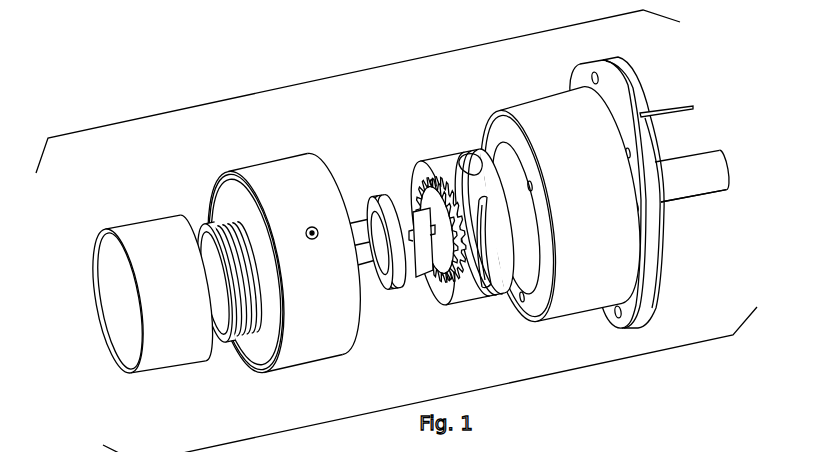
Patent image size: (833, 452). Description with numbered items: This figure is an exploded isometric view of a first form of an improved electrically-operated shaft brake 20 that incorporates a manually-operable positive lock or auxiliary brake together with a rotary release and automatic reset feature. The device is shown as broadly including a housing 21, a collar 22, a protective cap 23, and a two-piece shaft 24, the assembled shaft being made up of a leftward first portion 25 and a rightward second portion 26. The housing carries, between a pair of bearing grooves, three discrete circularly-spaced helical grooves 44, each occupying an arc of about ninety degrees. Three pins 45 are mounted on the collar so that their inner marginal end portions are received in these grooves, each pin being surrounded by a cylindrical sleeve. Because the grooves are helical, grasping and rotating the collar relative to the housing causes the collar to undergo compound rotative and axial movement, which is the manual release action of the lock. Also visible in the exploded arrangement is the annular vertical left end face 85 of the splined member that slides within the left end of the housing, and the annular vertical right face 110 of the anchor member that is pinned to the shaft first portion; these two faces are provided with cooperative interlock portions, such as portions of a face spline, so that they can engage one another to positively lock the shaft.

The electrically-operated shaft brake 20 is at (345, 75).
The housing 21 is at (637, 87).
The collar 22 is at (227, 172).
The protective cap 23 is at (103, 230).
The two-piece shaft 24 is at (737, 157).
The shaft first portion 25 is at (358, 219).
The shaft second portion 26 is at (703, 199).
The helical grooves 44 is at (463, 148).
The pins 45 is at (317, 241).
The annular vertical left end face 85 is at (433, 284).
The annular vertical right face 110 is at (408, 184).